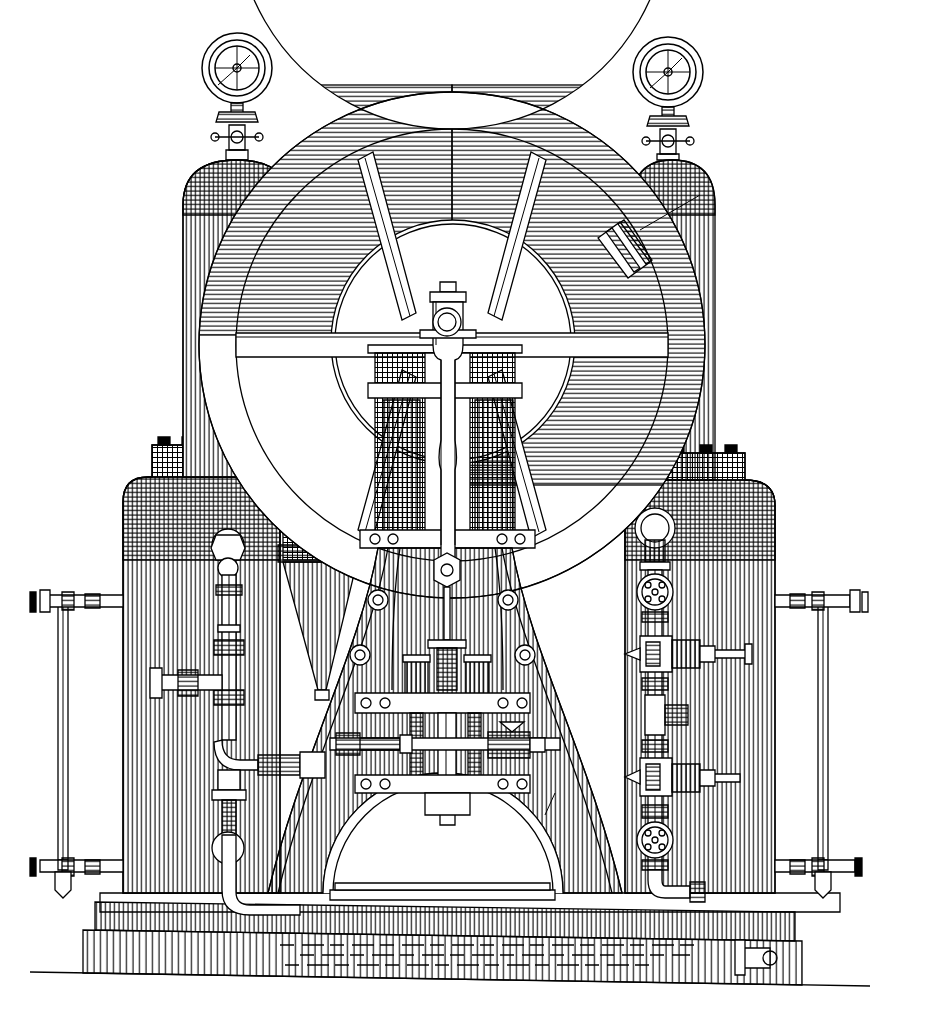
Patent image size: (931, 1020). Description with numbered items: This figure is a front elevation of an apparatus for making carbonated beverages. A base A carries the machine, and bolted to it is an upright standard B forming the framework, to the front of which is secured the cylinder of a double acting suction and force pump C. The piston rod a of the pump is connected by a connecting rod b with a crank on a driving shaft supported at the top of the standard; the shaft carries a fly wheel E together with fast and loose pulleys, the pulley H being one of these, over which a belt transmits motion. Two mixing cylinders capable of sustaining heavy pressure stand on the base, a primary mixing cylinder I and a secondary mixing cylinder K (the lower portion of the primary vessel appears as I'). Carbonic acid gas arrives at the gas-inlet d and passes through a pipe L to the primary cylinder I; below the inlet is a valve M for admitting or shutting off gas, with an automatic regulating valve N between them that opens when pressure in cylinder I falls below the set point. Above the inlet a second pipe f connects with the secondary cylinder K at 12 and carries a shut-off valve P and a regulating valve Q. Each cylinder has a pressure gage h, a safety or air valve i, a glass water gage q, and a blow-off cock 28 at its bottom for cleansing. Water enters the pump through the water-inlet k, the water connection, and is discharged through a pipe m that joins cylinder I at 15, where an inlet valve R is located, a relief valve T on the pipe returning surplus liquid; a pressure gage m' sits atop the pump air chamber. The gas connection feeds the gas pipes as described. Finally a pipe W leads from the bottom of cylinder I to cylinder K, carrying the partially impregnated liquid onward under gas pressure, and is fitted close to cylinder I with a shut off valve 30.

The base A is at (85, 950).
The lower left cylinder I' is at (181, 665).
The primary mixing cylinder I is at (211, 318).
The secondary mixing cylinder K is at (718, 300).
The pressure gage h is at (203, 70).
The safety or air valve i is at (213, 137).
The pressure gage m' is at (313, 436).
The connection of pipe m with cylinder I 15 is at (208, 540).
The fly wheel E is at (458, 136).
The loose pulley H is at (457, 222).
The upright standard B is at (398, 388).
The double acting suction and force pump C is at (436, 322).
The connecting rod b is at (460, 370).
The piston rod a is at (447, 624).
The guide bolt s is at (382, 618).
The water-inlet k is at (500, 810).
The water pipe water is at (456, 740).
The gas pipe gas is at (481, 726).
The shut off valve 30 is at (330, 868).
The gas pipe L is at (434, 890).
The inlet valve R is at (212, 560).
The water discharge pipe m is at (227, 745).
The relief valve T is at (215, 685).
The glass water gage q is at (68, 782).
The gas pipe f is at (672, 520).
The connection of pipe f with cylinder K 12 is at (668, 536).
The shut-off valve P is at (673, 590).
The automatic regulating valve Q is at (660, 650).
The gas-inlet d is at (668, 714).
The automatic regulating valve N is at (690, 782).
The valve M is at (675, 840).
The blow-off cock 28 is at (778, 962).
The transfer pipe W is at (233, 900).